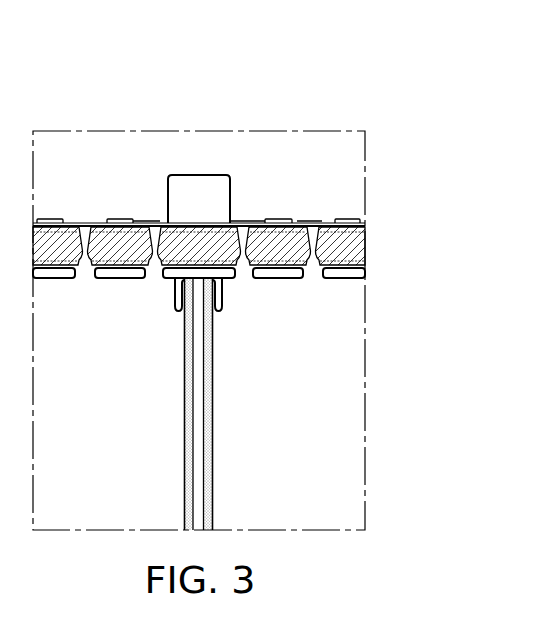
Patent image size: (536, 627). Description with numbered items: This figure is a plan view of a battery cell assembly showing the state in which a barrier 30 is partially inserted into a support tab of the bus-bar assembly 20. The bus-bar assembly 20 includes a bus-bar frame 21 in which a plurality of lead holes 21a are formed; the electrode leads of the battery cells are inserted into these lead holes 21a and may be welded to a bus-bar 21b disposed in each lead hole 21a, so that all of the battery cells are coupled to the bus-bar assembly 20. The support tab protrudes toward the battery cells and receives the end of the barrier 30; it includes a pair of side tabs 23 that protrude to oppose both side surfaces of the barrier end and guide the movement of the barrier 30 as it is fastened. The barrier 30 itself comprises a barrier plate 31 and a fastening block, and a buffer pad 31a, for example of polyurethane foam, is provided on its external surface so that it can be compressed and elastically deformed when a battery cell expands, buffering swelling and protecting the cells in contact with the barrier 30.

The bus-bar assembly 20 is at (199, 172).
The bus-bar frame 21 is at (124, 235).
The lead hole 21a is at (238, 243).
The bus-bar 21b is at (268, 240).
The side tab 23 is at (218, 297).
The barrier 30 is at (338, 404).
The barrier plate 31 is at (202, 424).
The buffer pad 31a is at (208, 458).